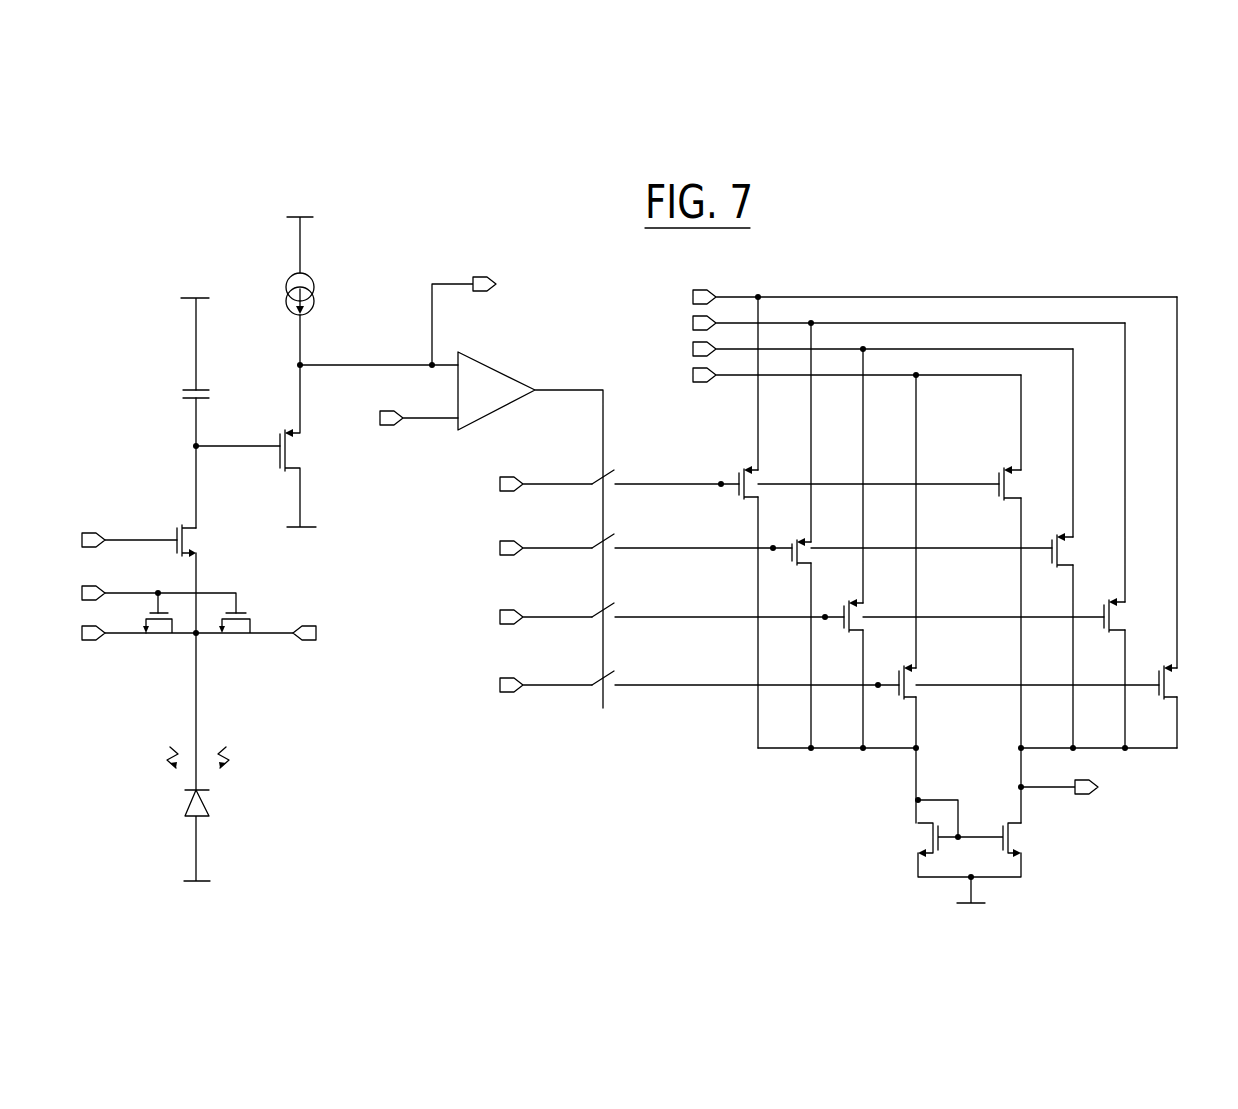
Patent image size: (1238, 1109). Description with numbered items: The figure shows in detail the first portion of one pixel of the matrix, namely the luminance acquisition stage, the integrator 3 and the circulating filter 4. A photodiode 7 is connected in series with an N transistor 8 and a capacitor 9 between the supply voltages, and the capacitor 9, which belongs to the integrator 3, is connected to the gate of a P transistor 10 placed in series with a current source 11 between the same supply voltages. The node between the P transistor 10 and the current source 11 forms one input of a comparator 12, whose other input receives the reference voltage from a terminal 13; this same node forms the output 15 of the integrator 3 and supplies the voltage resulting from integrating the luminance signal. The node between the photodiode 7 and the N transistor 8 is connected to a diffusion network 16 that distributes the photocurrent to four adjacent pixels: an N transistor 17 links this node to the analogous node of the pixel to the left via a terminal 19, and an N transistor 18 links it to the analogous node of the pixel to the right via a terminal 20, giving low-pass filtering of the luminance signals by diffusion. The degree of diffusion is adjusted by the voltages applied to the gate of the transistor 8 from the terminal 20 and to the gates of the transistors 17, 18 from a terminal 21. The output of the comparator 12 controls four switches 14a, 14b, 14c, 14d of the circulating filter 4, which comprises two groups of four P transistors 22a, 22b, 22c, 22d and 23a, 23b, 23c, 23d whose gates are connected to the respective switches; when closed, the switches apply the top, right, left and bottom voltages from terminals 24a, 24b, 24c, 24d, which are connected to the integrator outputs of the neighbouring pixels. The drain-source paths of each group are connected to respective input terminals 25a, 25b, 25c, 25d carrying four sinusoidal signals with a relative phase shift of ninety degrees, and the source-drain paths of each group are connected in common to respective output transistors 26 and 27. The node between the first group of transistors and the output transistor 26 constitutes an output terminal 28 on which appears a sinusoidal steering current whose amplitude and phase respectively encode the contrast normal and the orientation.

The integrator 3 is at (127, 485).
The circulating filter 4 is at (927, 584).
The photodiode 7 is at (206, 805).
The N transistor 8 is at (207, 538).
The capacitor 9 is at (207, 401).
The P transistor 10 is at (292, 443).
The current source 11 is at (314, 281).
The comparator 12 is at (491, 378).
The terminal 13 is at (391, 429).
The switch 14a is at (665, 460).
The switch 14b is at (692, 526).
The switch 14c is at (718, 594).
The switch 14d is at (745, 662).
The output 15 is at (481, 278).
The diffusion network 16 is at (216, 651).
The N transistor 17 is at (160, 631).
The N transistor 18 is at (213, 645).
The terminal 19 is at (97, 630).
The terminal 20 is at (87, 533).
The terminal 21 is at (96, 590).
The P transistor 22a is at (757, 478).
The P transistor 22b is at (810, 546).
The P transistor 22c is at (862, 608).
The P transistor 22d is at (915, 678).
The P transistor 23a is at (1015, 478).
The P transistor 23b is at (1068, 546).
The P transistor 23c is at (1122, 610).
The P transistor 23d is at (1176, 678).
The terminal 24a is at (507, 477).
The terminal 24b is at (507, 541).
The terminal 24c is at (507, 610).
The terminal 24d is at (507, 678).
The input terminal 25a is at (699, 291).
The input terminal 25b is at (712, 319).
The input terminal 25c is at (708, 353).
The input terminal 25d is at (703, 386).
The output transistor 26 is at (930, 837).
The output transistor 27 is at (1013, 835).
The output terminal 28 is at (1090, 792).